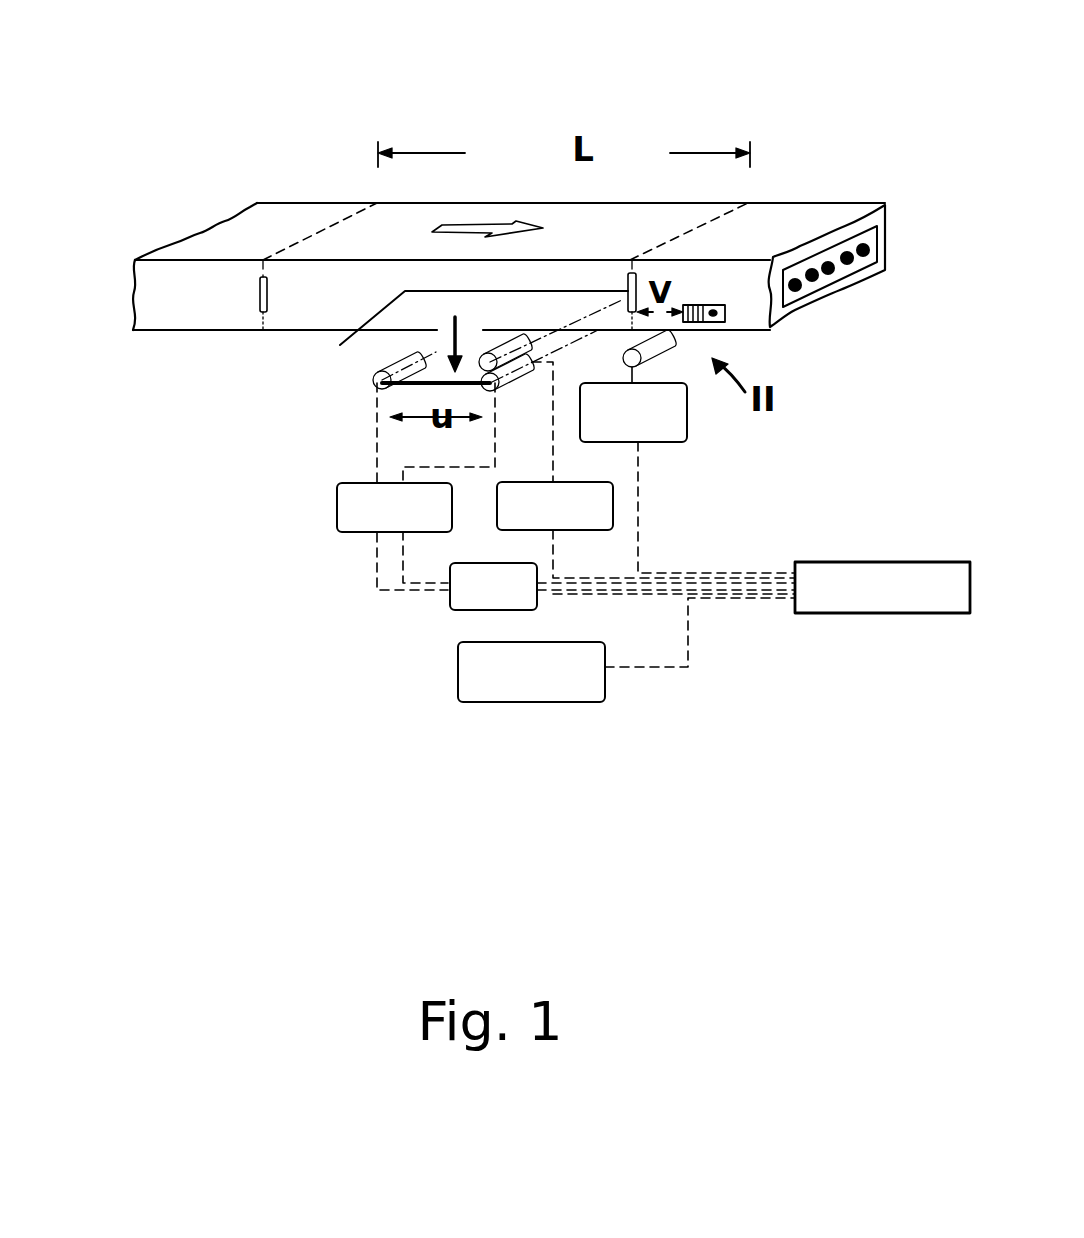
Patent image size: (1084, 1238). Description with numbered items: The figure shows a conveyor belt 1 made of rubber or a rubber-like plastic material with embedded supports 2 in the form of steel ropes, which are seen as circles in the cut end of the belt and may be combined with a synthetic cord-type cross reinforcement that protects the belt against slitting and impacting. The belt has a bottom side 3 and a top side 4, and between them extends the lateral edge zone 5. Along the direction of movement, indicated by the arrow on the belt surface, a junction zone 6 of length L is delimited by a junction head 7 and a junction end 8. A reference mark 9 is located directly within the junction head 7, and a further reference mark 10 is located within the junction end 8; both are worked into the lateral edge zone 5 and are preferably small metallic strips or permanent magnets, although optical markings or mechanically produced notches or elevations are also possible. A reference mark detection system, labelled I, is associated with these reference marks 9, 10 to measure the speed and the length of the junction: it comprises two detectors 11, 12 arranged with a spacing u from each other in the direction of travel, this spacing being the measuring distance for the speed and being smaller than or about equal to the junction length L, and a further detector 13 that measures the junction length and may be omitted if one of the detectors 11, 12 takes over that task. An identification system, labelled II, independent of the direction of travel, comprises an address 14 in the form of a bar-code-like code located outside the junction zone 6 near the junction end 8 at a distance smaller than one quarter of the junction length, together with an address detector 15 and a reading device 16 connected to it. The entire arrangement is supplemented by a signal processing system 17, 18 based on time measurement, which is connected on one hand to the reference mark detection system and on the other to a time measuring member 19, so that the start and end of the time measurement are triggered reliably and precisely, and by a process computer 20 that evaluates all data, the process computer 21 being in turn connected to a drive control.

The conveyor belt 1 is at (703, 92).
The embedded supports 2 is at (847, 276).
The bottom side 3 is at (180, 330).
The top side 4 is at (283, 215).
The lateral edge zone 5 is at (160, 310).
The junction zone 6 is at (564, 110).
The junction head 7 is at (290, 250).
The junction end 8 is at (748, 203).
The reference mark 9 is at (263, 312).
The reference mark 10 is at (460, 340).
The detector 11 is at (382, 380).
The detector 12 is at (515, 372).
The detector 13 is at (522, 345).
The address 14 is at (747, 330).
The address detector 15 is at (670, 342).
The reading device 16 is at (657, 415).
The signal processing system 17 is at (372, 510).
The signal processing system 18 is at (530, 507).
The time measuring member 19 is at (473, 585).
The process computer 20 is at (845, 590).
The process computer 21 is at (543, 673).